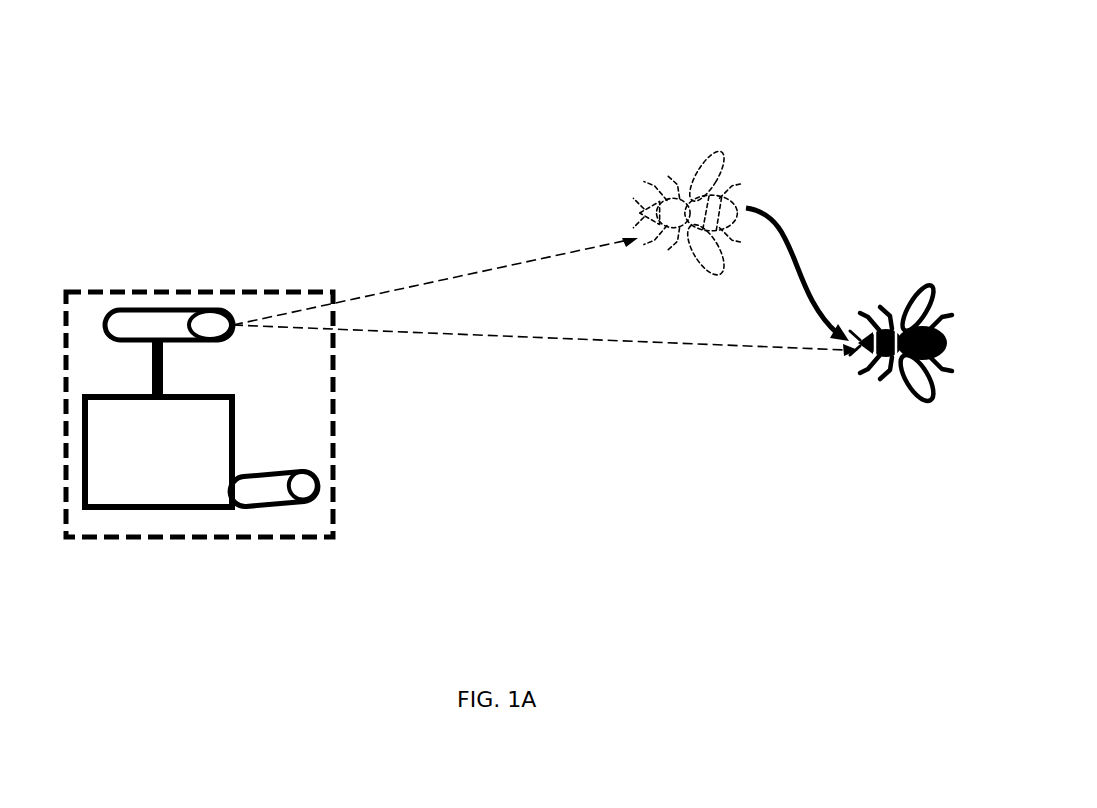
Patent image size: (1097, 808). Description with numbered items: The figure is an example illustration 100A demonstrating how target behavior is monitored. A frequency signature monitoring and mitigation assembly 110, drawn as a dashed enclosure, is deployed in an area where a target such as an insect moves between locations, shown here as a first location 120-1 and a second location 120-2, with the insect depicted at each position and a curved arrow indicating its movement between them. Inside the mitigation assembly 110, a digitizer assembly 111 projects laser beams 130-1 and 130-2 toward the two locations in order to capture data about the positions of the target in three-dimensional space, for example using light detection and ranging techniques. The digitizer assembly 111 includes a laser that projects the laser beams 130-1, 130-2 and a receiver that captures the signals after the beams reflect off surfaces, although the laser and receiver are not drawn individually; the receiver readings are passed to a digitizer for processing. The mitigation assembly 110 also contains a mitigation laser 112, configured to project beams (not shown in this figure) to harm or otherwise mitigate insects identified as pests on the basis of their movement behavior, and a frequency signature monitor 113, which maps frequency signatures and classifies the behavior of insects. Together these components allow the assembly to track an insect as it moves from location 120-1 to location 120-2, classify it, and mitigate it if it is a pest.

The example illustration 100A is at (812, 103).
The frequency signature monitoring and mitigation assembly 110 is at (78, 292).
The digitizer assembly 111 is at (193, 312).
The mitigation laser 112 is at (268, 506).
The frequency signature monitor 113 is at (160, 509).
The location 120-1 is at (690, 156).
The location 120-2 is at (906, 296).
The laser beam 130-1 is at (528, 262).
The laser beam 130-2 is at (551, 340).